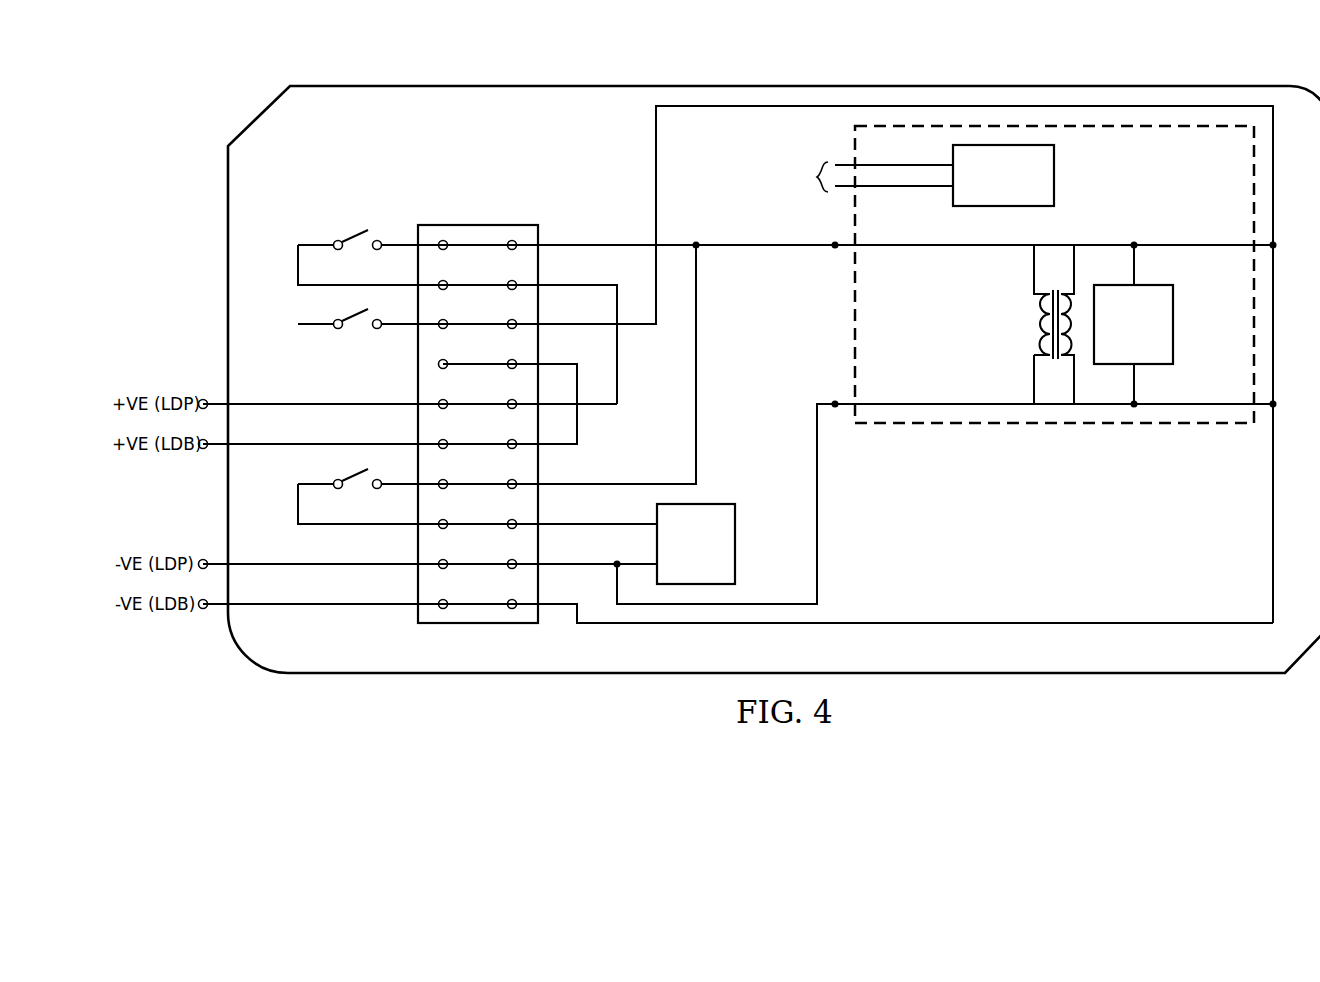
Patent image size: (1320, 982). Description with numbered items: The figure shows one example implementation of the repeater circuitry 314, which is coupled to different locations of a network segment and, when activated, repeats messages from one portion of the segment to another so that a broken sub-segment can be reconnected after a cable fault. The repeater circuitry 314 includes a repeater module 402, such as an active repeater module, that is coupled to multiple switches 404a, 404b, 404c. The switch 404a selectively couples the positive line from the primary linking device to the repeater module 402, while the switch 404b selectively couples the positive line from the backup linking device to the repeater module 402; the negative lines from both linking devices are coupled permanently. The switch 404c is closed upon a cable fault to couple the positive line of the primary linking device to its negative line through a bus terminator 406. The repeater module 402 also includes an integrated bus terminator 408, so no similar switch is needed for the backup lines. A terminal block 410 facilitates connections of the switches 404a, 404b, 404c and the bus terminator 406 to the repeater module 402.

The repeater circuitry 314 is at (609, 69).
The terminal block 410 is at (467, 224).
The switch 404a is at (357, 236).
The switch 404b is at (357, 313).
The switch 404c is at (357, 473).
The repeater module 402 is at (1004, 307).
The bus terminator 406 is at (735, 543).
The bus terminator 408 is at (1173, 323).